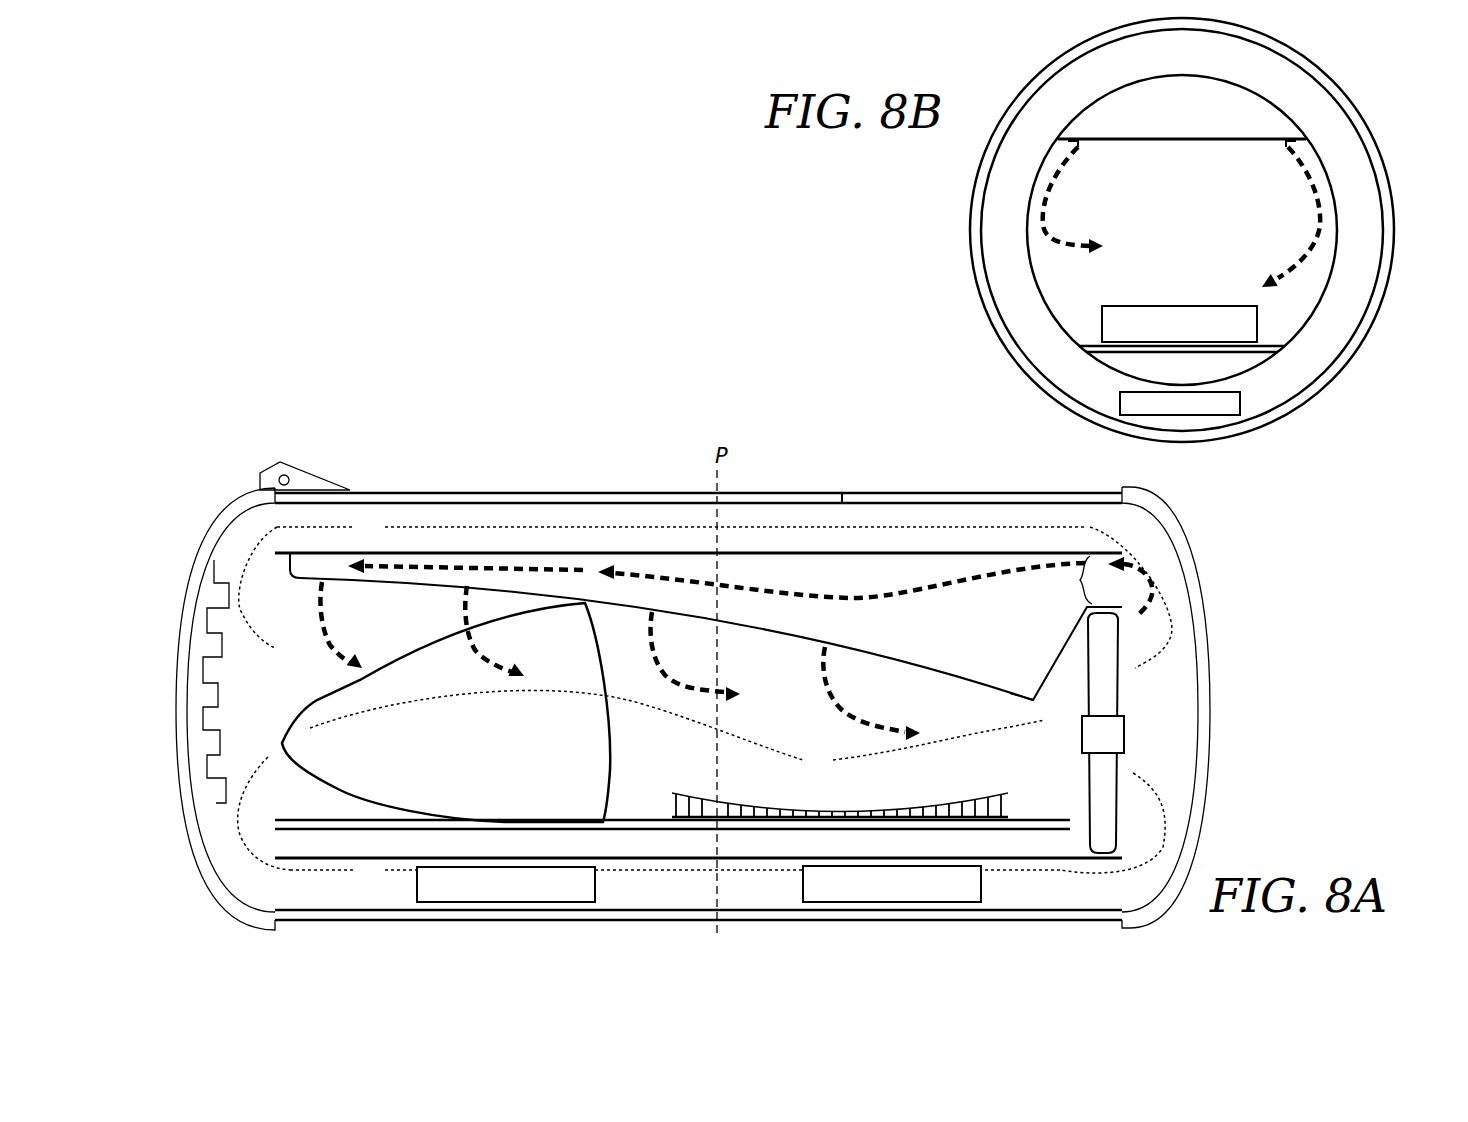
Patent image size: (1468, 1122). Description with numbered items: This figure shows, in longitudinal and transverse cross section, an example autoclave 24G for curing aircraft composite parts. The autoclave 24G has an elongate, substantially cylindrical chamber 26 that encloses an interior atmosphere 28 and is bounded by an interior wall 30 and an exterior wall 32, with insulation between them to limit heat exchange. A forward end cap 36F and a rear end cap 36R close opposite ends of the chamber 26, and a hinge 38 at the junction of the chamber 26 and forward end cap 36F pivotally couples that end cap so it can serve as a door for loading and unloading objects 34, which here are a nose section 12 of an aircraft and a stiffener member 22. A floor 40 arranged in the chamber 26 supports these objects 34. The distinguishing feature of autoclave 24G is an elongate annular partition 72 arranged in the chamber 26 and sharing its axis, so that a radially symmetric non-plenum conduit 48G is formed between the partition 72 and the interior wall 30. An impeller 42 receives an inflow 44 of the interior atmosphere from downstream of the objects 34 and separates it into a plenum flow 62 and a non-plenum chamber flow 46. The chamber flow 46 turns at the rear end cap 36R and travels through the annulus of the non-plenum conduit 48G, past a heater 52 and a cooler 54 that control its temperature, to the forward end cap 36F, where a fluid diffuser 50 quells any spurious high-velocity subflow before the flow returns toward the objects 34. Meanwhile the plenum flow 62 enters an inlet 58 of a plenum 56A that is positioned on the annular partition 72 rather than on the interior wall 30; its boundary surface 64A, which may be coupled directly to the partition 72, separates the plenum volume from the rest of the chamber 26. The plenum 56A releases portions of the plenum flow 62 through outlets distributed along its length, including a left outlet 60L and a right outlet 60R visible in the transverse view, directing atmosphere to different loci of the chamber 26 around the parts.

In FIG. 8A, the nose section 12 is at (458, 724).
In FIG. 8A, the stiffener member 22 is at (916, 800).
In FIG. 8B, the stiffener member 22 is at (1191, 338).
In FIG. 8A, the autoclave 24G is at (701, 639).
In FIG. 8B, the autoclave 24G is at (1193, 244).
In FIG. 8A, the elongate chamber 26 is at (826, 480).
In FIG. 8B, the elongate chamber 26 is at (1367, 104).
In FIG. 8A, the interior atmosphere 28 is at (318, 652).
In FIG. 8A, the interior wall 30 is at (1087, 908).
In FIG. 8B, the interior wall 30 is at (1025, 358).
In FIG. 8A, the exterior wall 32 is at (842, 490).
In FIG. 8A, the objects 34 is at (786, 737).
In FIG. 8A, the forward end cap 36F is at (178, 712).
In FIG. 8A, the rear end cap 36R is at (1210, 705).
In FIG. 8A, the hinge 38 is at (312, 475).
In FIG. 8A, the floor 40 is at (365, 820).
In FIG. 8B, the floor 40 is at (1094, 342).
In FIG. 8A, the impeller 42 is at (1115, 749).
In FIG. 8A, the inflow 44 is at (1054, 754).
In FIG. 8A, the chamber flow 46 is at (1152, 690).
In FIG. 8A, the non-plenum conduit 48G is at (690, 900).
In FIG. 8B, the non-plenum conduit 48G is at (1045, 250).
In FIG. 8A, the fluid diffuser 50 is at (222, 838).
In FIG. 8A, the heater 52 is at (516, 899).
In FIG. 8B, the heater 52 is at (1191, 415).
In FIG. 8A, the cooler 54 is at (904, 900).
In FIG. 8A, the plenum 56A is at (1030, 660).
In FIG. 8B, the plenum 56A is at (1202, 122).
In FIG. 8A, the inlet 58 is at (1074, 580).
In FIG. 8B, the left outlet 60L is at (1093, 155).
In FIG. 8B, the right outlet 60R is at (1271, 155).
In FIG. 8A, the plenum flow 62 is at (862, 592).
In FIG. 8A, the boundary surface 64A is at (985, 690).
In FIG. 8A, the elongate annular partition 72 is at (1076, 553).
In FIG. 8B, the elongate annular partition 72 is at (1333, 246).